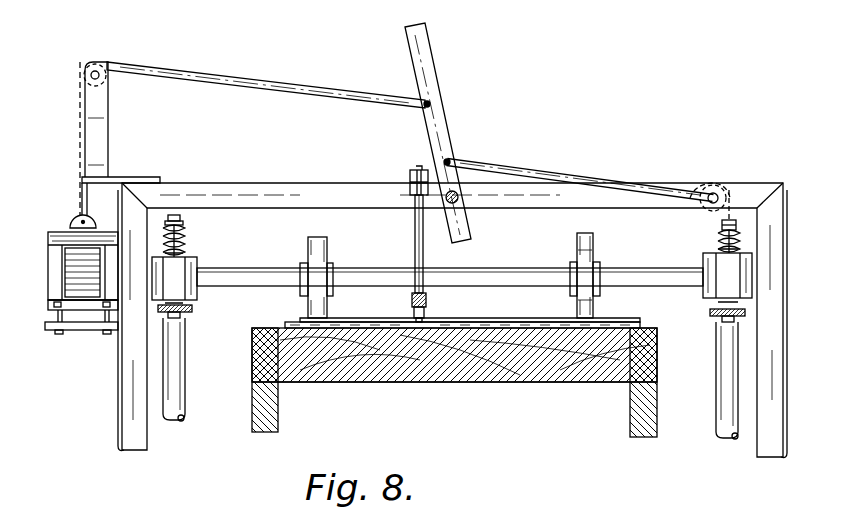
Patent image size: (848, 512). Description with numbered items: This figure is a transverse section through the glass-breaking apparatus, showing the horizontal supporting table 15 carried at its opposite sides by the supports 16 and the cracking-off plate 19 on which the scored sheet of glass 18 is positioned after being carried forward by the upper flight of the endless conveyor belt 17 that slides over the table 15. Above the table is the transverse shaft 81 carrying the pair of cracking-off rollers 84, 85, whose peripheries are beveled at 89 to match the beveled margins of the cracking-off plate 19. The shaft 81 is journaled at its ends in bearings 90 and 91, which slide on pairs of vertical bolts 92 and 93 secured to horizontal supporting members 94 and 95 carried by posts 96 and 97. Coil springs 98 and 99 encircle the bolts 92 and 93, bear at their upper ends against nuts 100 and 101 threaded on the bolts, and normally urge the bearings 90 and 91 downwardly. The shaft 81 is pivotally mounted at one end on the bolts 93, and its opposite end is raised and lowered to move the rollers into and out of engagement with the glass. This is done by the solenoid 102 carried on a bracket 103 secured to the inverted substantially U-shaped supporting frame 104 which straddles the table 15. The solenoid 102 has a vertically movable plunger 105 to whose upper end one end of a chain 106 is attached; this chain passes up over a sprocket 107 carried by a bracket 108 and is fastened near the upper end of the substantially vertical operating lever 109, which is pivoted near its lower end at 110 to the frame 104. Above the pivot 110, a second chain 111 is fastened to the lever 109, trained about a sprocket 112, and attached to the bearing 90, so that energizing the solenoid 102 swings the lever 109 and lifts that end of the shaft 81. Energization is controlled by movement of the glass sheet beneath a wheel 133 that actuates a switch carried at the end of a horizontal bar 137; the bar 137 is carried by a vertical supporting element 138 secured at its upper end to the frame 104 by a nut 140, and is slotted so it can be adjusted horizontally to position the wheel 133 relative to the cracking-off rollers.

The supporting table 15 is at (428, 382).
The supports 16 is at (268, 394).
The endless conveyor belt 17 is at (303, 310).
The scored sheet of glass 18 is at (470, 318).
The cracking-off plate 19 is at (365, 382).
The transverse shaft 81 is at (513, 253).
The cracking-off roller 84 is at (598, 251).
The cracking-off roller 85 is at (335, 250).
The beveled periphery 89 is at (583, 258).
The bearing 90 is at (716, 283).
The bearing 91 is at (185, 266).
The vertical bolts 92 is at (710, 312).
The vertical bolts 93 is at (192, 308).
The horizontal supporting member 94 is at (718, 320).
The horizontal supporting member 95 is at (185, 316).
The post 96 is at (722, 376).
The post 97 is at (176, 358).
The coil spring 98 is at (718, 242).
The coil spring 99 is at (185, 240).
The nut 100 is at (720, 225).
The nut 101 is at (183, 218).
The solenoid 102 is at (60, 280).
The bracket 103 is at (88, 326).
The supporting frame 104 is at (284, 184).
The plunger 105 is at (77, 222).
The chain 106 is at (80, 101).
The sprocket 107 is at (104, 79).
The bracket 108 is at (99, 128).
The operating lever 109 is at (437, 93).
The pivot 110 is at (460, 197).
The chain 111 is at (555, 168).
The sprocket 112 is at (706, 186).
The wheel 133 is at (413, 305).
The horizontal bar 137 is at (427, 299).
The vertical supporting element 138 is at (415, 248).
The nut 140 is at (410, 180).